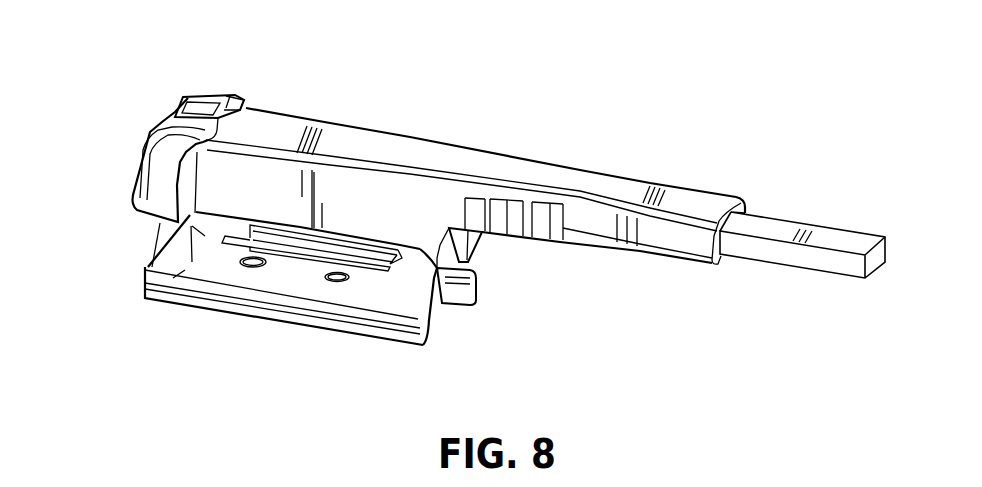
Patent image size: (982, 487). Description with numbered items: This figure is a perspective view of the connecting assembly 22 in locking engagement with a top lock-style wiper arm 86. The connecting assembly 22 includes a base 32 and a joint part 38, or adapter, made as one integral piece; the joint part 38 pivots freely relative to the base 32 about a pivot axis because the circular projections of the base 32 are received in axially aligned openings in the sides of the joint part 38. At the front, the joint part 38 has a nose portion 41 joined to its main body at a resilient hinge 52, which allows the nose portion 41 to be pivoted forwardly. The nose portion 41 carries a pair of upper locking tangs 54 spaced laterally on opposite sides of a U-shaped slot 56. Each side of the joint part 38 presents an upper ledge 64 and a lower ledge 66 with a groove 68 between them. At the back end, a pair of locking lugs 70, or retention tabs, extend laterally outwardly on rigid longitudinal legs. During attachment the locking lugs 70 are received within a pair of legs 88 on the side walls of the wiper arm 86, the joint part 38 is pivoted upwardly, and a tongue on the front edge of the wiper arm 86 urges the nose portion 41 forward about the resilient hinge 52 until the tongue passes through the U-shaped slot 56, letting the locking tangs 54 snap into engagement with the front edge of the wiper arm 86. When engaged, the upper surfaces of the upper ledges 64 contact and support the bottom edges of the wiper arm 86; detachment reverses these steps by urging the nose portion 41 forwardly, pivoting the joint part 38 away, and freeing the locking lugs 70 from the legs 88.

The connecting assembly 22 is at (134, 101).
The base 32 is at (195, 303).
The joint part 38 is at (204, 85).
The nose portion 41 is at (150, 142).
The resilient hinge 52 is at (158, 224).
The upper locking tangs 54 is at (217, 106).
The U-shaped slot 56 is at (184, 108).
The upper ledge 64 is at (297, 254).
The lower ledge 66 is at (295, 257).
The groove 68 is at (358, 258).
The locking lugs 70 is at (478, 236).
The top lock-style wiper arm 86 is at (436, 152).
The legs 88 is at (447, 304).